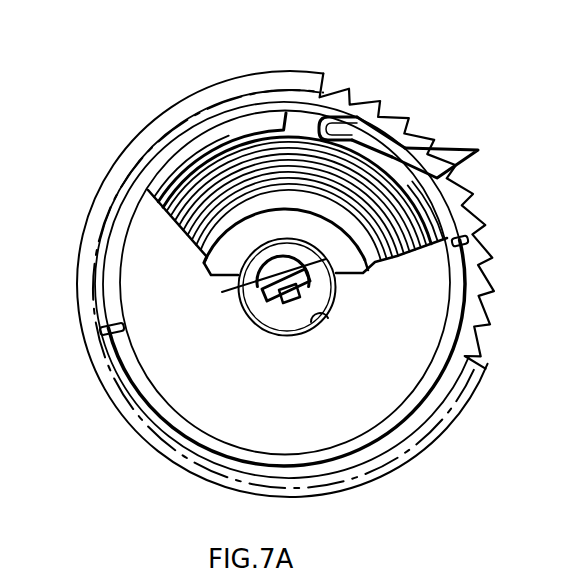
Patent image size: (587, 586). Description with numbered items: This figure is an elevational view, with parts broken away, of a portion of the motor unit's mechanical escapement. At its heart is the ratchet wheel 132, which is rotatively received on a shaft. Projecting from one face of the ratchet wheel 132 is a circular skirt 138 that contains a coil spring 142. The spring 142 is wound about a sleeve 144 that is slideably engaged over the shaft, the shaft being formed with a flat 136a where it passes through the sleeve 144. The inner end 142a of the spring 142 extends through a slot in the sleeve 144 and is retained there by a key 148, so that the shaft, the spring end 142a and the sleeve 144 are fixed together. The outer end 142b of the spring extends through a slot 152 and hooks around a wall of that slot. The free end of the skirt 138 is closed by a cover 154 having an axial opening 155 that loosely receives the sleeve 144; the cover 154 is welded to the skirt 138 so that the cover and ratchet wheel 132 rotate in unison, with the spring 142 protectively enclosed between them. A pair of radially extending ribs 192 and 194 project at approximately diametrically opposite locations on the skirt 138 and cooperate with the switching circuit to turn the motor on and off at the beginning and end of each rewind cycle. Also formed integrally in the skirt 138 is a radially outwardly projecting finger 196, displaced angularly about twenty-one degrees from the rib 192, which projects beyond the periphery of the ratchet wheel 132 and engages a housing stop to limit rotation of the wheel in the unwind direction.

The ratchet wheel 132 is at (479, 341).
The flat 136a is at (403, 302).
The circular skirt 138 is at (383, 138).
The coil spring 142 is at (200, 185).
The inner end of spring 142a is at (215, 302).
The outer end of spring 142b is at (320, 113).
The sleeve 144 is at (270, 317).
The key 148 is at (297, 300).
The slot 152 is at (298, 121).
The cover 154 is at (367, 420).
The axial opening 155 is at (322, 313).
The rib 192 is at (462, 233).
The rib 194 is at (108, 337).
The finger 196 is at (436, 165).